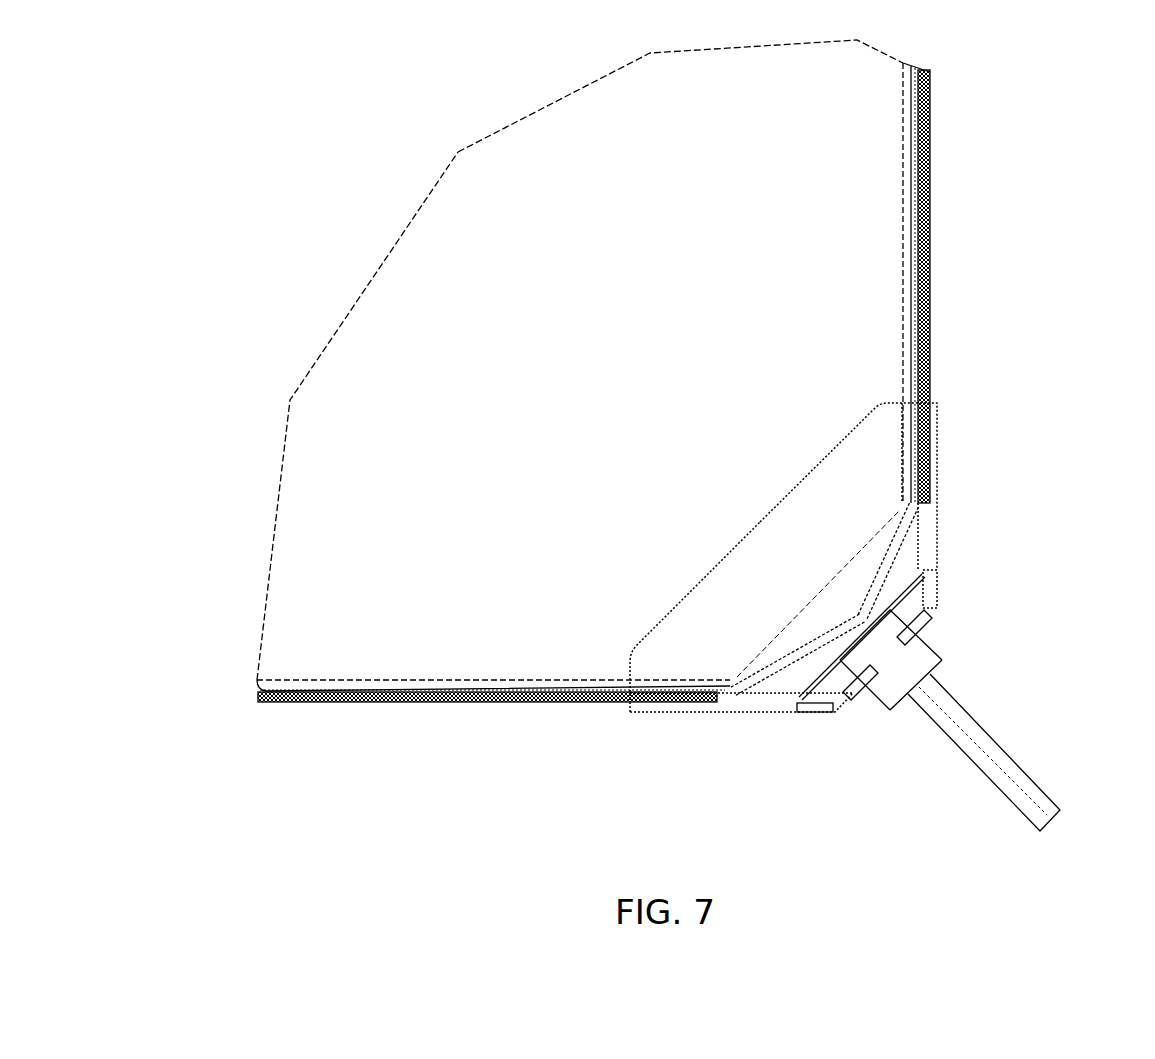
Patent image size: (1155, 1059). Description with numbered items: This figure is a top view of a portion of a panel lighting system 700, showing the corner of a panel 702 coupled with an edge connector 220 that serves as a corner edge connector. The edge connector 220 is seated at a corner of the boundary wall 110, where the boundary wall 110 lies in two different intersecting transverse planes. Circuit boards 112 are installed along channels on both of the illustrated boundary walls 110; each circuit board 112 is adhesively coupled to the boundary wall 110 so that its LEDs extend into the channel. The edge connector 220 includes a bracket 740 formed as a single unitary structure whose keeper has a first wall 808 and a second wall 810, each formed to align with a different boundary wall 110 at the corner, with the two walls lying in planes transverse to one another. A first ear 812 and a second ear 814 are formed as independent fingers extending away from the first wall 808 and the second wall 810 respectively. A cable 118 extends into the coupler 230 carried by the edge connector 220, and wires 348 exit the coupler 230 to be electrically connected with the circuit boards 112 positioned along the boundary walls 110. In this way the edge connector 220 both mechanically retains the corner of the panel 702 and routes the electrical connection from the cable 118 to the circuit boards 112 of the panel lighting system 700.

The panel lighting system 700 is at (386, 114).
The panel 702 is at (803, 93).
The boundary wall 110 is at (944, 183).
The circuit board 112 is at (936, 330).
The wires 348 is at (880, 577).
The first wall 808 is at (737, 713).
The second wall 810 is at (938, 443).
The bracket 740 is at (947, 507).
The edge connector 220 is at (791, 774).
The coupler 230 is at (961, 648).
The second ear 814 is at (926, 630).
The first ear 812 is at (858, 700).
The cable 118 is at (1024, 766).